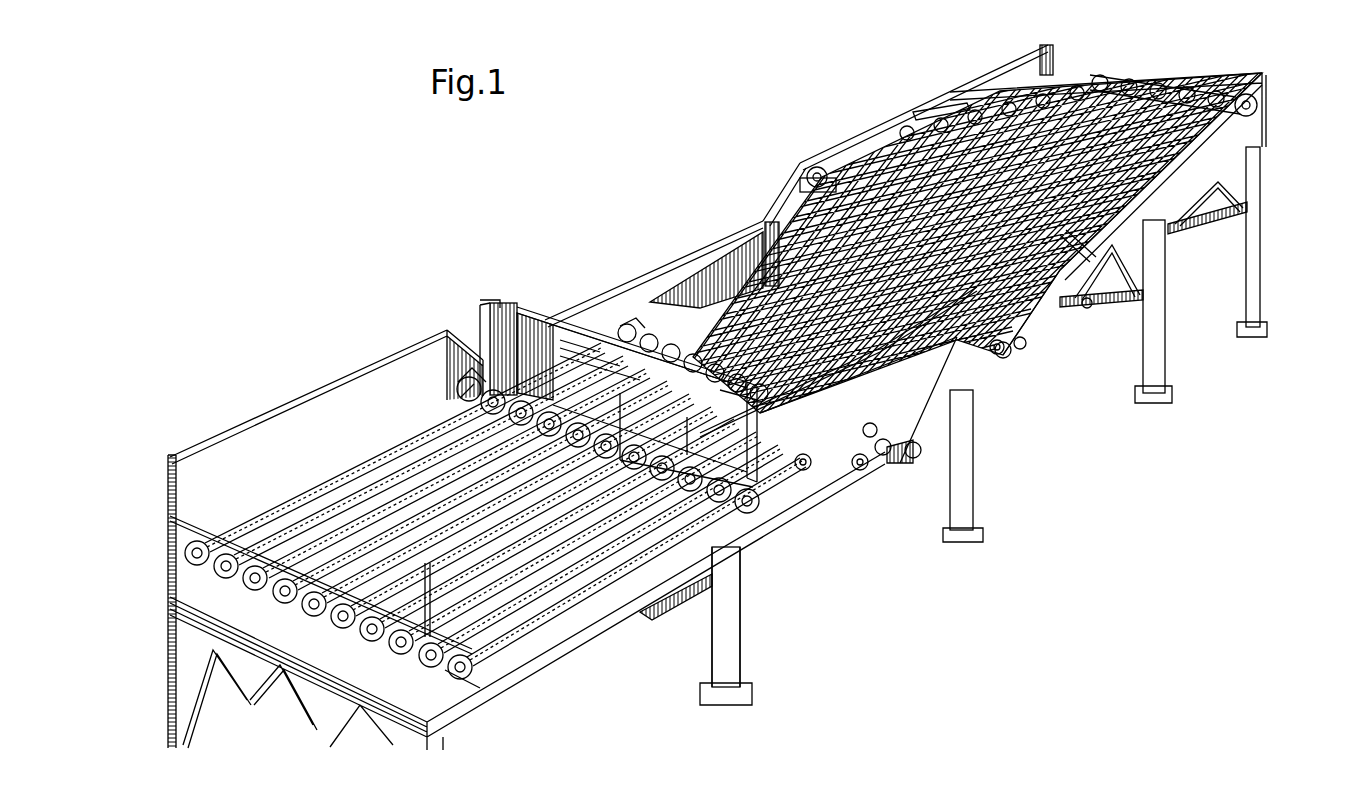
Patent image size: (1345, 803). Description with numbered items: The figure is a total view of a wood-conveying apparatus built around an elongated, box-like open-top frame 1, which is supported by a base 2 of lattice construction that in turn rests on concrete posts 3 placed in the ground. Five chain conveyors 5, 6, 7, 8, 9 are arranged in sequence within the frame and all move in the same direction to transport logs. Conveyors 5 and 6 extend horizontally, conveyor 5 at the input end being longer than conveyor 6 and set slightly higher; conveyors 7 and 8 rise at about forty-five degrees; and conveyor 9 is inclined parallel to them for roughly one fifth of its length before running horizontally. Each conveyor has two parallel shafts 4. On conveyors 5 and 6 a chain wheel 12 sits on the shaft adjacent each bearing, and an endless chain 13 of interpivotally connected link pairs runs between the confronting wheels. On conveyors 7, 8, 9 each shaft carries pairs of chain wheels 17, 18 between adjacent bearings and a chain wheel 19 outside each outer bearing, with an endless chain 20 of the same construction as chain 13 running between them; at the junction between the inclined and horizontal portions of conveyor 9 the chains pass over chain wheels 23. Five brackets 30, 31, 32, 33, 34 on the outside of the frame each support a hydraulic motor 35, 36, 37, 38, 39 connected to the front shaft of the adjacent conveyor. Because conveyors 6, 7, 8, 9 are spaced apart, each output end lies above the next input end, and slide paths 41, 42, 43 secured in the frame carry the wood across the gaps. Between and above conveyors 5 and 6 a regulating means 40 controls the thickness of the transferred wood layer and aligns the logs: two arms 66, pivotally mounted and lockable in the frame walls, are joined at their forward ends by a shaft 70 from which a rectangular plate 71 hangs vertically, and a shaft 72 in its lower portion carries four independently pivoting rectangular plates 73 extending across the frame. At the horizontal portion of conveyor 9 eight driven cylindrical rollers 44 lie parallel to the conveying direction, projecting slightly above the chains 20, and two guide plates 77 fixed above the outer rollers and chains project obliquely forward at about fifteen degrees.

The frame 1 is at (602, 613).
The base 2 is at (673, 607).
The concrete posts 3 is at (733, 692).
The shafts 4 is at (480, 353).
The chain conveyor 5 is at (470, 294).
The chain conveyor 6 is at (920, 556).
The chain conveyor 7 is at (983, 436).
The chain conveyor 8 is at (1137, 333).
The chain conveyor 9 is at (1136, 238).
The chain wheel 12 is at (467, 340).
The endless chain 13 is at (212, 530).
The chain wheel 17 is at (997, 354).
The chain wheel 18 is at (1059, 412).
The chain wheel 19 is at (1256, 100).
The endless chain 20 is at (1233, 115).
The chain wheels 23 is at (1298, 90).
The bracket 30 is at (417, 363).
The bracket 31 is at (682, 350).
The bracket 32 is at (720, 248).
The bracket 33 is at (800, 188).
The bracket 34 is at (1017, 63).
The hydraulic motor 35 is at (455, 378).
The hydraulic motor 36 is at (620, 333).
The hydraulic motor 37 is at (748, 230).
The hydraulic motor 38 is at (825, 170).
The hydraulic motor 39 is at (1027, 62).
The regulating means 40 is at (618, 350).
The slide path 41 is at (907, 467).
The slide path 42 is at (1013, 350).
The slide path 43 is at (1073, 257).
The cylindrical rollers 44 is at (977, 117).
The arms 66 is at (510, 305).
The shaft 70 is at (528, 357).
The rectangular plate 71 is at (673, 367).
The shaft 72 is at (557, 370).
The rectangular plates 73 is at (583, 340).
The guide plates 77 is at (940, 113).